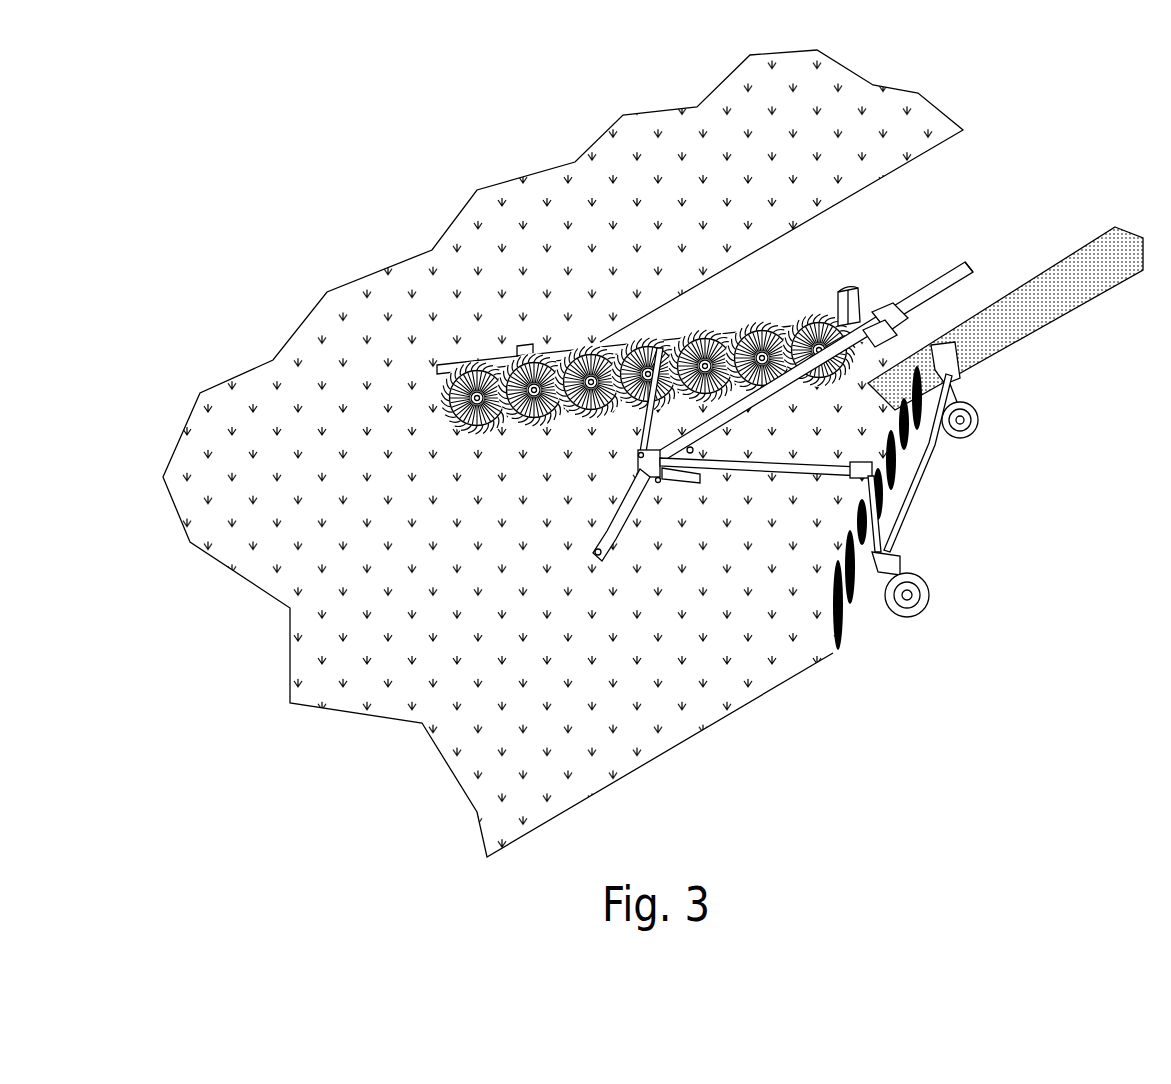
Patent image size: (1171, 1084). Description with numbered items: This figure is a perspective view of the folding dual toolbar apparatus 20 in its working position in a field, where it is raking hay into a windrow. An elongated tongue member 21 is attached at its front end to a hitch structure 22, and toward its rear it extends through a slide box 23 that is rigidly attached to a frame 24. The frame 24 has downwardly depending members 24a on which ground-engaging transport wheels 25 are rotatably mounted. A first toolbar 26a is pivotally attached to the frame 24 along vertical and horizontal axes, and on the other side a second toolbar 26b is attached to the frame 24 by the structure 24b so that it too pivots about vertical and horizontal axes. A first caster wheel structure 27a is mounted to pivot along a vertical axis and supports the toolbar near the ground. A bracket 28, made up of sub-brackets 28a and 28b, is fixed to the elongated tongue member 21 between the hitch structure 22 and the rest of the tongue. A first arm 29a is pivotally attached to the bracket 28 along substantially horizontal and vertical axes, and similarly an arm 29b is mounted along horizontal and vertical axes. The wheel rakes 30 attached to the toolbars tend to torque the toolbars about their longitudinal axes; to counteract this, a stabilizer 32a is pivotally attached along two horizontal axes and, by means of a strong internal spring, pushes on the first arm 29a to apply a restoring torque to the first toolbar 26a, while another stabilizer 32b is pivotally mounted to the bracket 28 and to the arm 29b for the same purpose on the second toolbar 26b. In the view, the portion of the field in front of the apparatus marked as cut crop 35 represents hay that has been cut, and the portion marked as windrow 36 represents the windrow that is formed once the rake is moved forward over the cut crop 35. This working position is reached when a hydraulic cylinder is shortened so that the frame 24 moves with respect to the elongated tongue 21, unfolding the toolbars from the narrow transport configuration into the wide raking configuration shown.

The folding dual toolbar apparatus 20 is at (860, 244).
The elongated tongue member 21 is at (940, 285).
The hitch structure 22 is at (620, 535).
The slide box 23 is at (890, 313).
The frame 24 is at (907, 351).
The downwardly depending members 24a is at (950, 384).
The structure 24b is at (833, 307).
The ground-engaging transport wheels 25 is at (978, 420).
The first toolbar 26a is at (908, 512).
The second toolbar 26b is at (603, 347).
The first caster wheel structure 27a is at (929, 592).
The bracket 28 is at (620, 495).
The sub-bracket 28a is at (660, 484).
The sub-bracket 28b is at (637, 456).
The first arm 29a is at (783, 466).
The arm 29b is at (640, 422).
The wheel rakes 30 is at (911, 463).
The stabilizer 32a is at (689, 482).
The stabilizer 32b is at (688, 450).
The cut crop 35 is at (715, 700).
The windrow 36 is at (1070, 305).